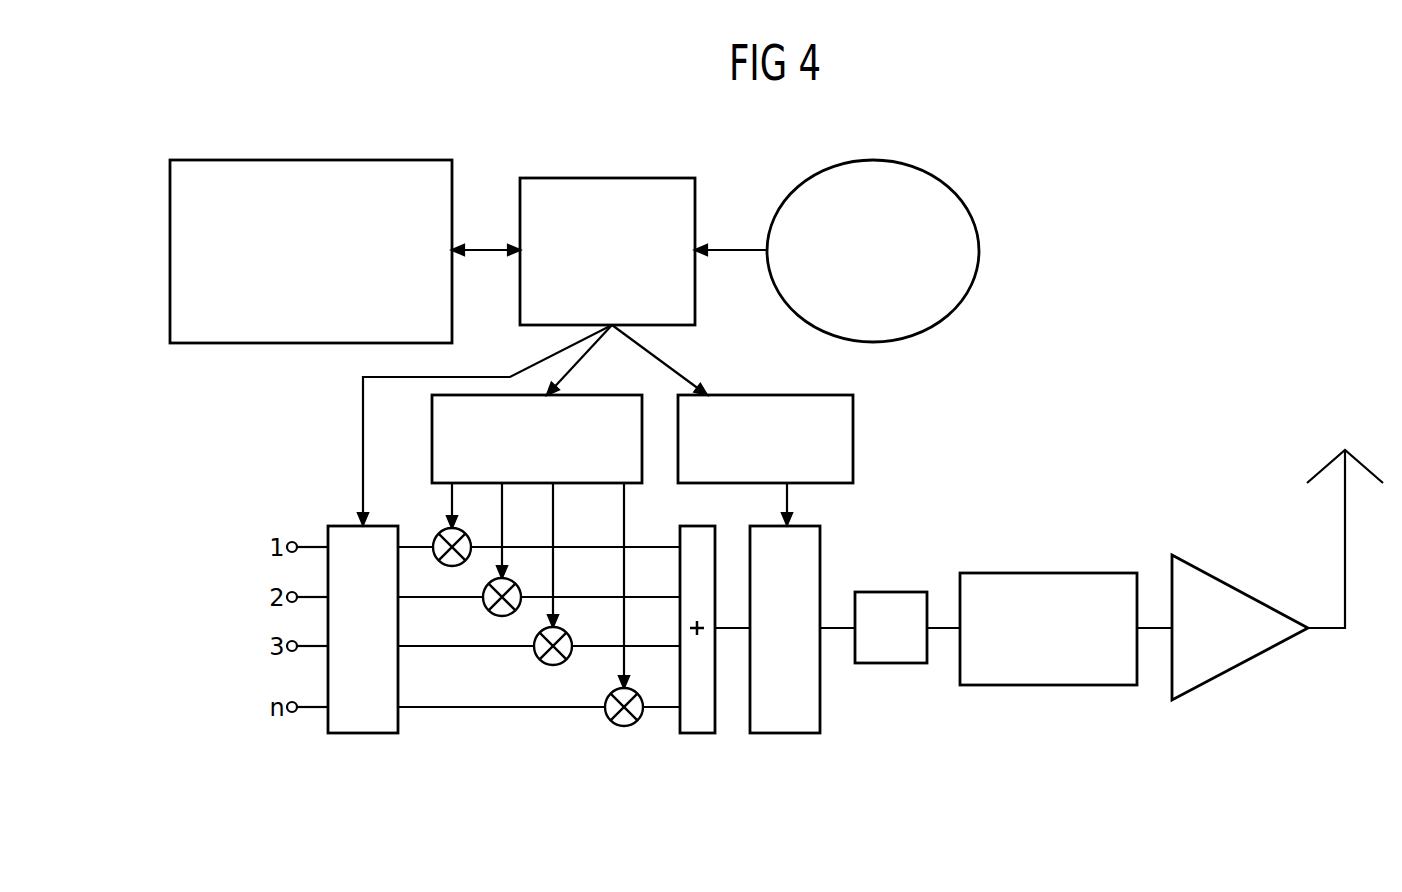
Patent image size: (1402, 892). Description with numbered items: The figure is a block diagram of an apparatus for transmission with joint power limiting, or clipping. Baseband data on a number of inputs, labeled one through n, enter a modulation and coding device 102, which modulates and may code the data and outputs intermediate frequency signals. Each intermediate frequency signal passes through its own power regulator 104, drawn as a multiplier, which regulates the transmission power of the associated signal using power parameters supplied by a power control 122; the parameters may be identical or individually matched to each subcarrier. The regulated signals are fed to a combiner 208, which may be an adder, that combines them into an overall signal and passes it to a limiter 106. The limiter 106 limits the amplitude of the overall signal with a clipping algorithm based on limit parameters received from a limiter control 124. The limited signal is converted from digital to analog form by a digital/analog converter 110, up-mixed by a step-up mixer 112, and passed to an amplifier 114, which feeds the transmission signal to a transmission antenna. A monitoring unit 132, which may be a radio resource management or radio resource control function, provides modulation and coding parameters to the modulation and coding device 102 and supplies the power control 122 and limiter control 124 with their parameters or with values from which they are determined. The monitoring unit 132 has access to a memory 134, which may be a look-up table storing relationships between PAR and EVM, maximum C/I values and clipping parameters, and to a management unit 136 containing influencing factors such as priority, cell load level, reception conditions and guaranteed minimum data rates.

The modulation and coding device 102 is at (365, 735).
The power regulator 104 is at (439, 534).
The limiter 106 is at (790, 735).
The digital/analog converter 110 is at (890, 592).
The step-up mixer 112 is at (1047, 573).
The amplifier 114 is at (1223, 578).
The power control 122 is at (515, 453).
The limiter control 124 is at (743, 453).
The monitoring unit 132 is at (608, 178).
The memory 134 is at (310, 160).
The management unit 136 is at (872, 160).
The combiner 208 is at (700, 735).